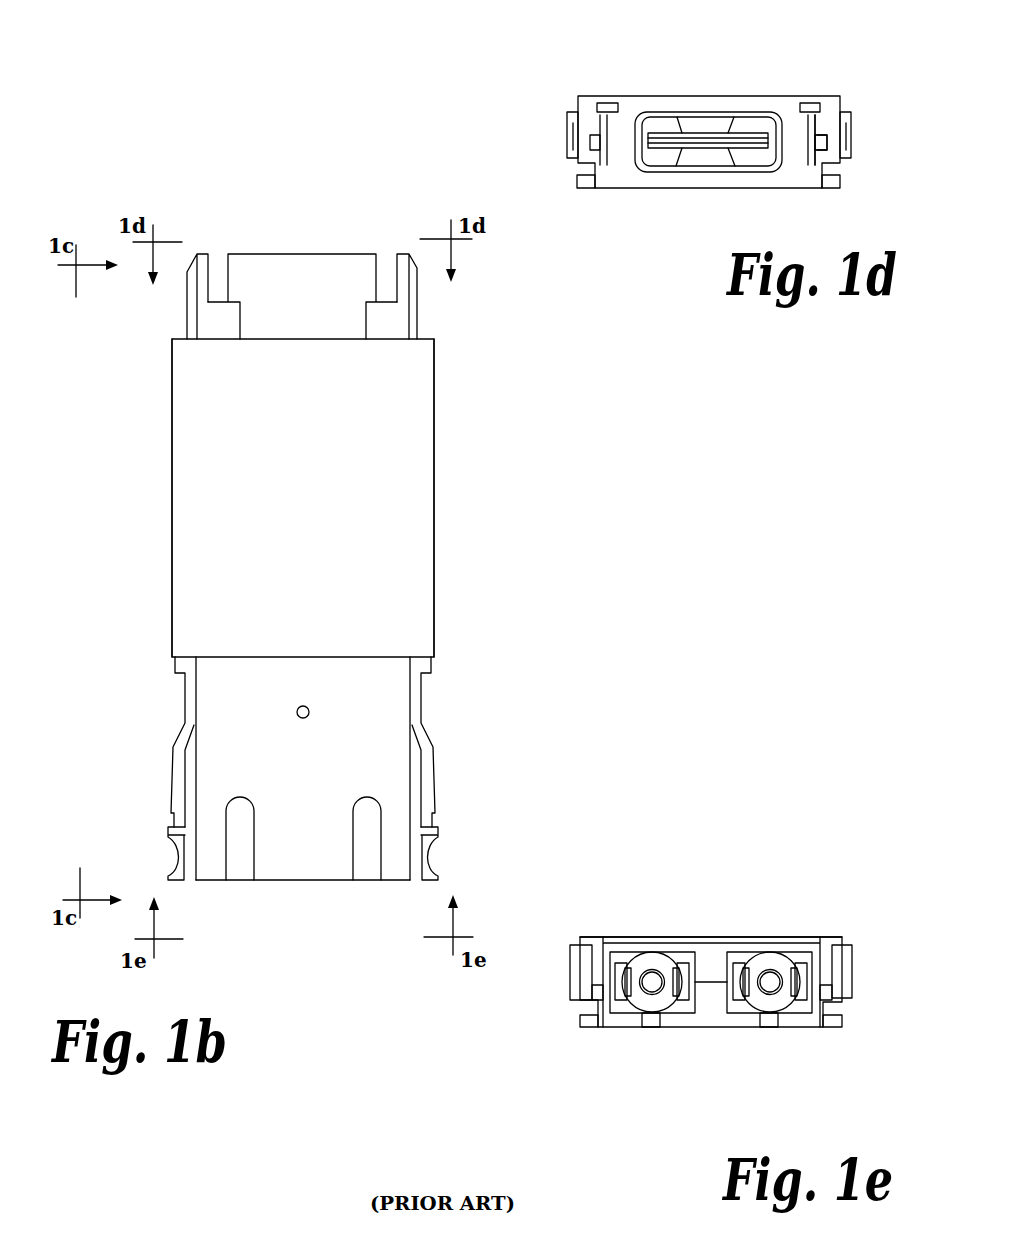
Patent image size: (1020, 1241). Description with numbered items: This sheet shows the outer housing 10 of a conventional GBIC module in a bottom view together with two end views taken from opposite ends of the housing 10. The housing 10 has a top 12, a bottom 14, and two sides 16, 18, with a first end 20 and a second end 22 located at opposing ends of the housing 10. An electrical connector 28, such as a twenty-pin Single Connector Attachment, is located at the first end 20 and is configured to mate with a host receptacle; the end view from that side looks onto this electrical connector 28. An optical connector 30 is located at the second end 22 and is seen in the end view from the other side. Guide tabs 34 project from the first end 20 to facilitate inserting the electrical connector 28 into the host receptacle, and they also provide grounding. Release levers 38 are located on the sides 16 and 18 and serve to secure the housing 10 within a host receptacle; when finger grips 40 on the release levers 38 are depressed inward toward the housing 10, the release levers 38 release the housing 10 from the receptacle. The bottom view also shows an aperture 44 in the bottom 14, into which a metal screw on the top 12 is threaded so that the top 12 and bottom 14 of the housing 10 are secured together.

In FIG. 1B, the outer housing 10 is at (273, 129).
In FIG. 1E, the top 12 is at (677, 937).
In FIG. 1B, the bottom 14 is at (370, 476).
In FIG. 1B, the side 16 is at (172, 410).
In FIG. 1B, the side 18 is at (434, 438).
In FIG. 1B, the first end 20 is at (295, 253).
In FIG. 1B, the second end 22 is at (293, 882).
In FIG. 1D, the electrical connector 28 is at (585, 78).
In FIG. 1E, the optical connector 30 is at (650, 1040).
In FIG. 1B, the guide tabs 34 is at (417, 303).
In FIG. 1D, the guide tabs 34 is at (818, 140).
In FIG. 1B, the release levers 38 is at (180, 795).
In FIG. 1B, the finger grips 40 is at (428, 867).
In FIG. 1E, the finger grips 40 is at (837, 970).
In FIG. 1B, the aperture 44 is at (303, 706).